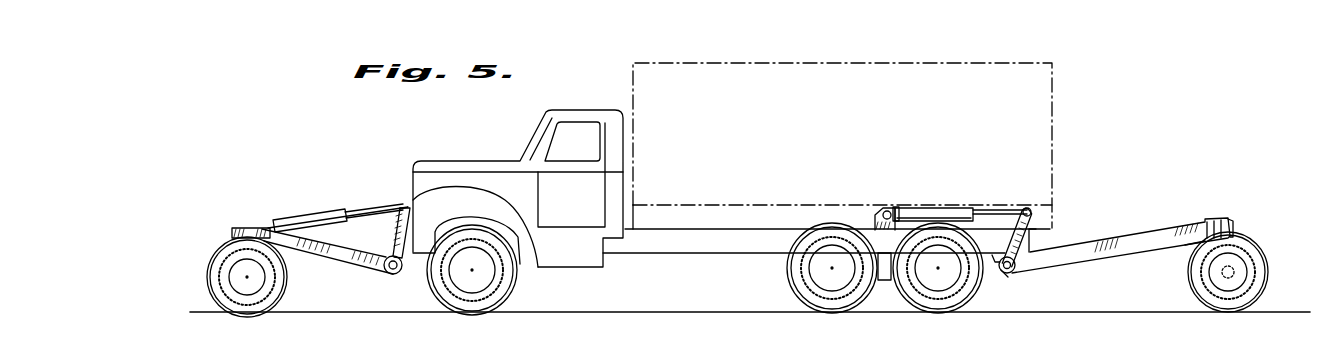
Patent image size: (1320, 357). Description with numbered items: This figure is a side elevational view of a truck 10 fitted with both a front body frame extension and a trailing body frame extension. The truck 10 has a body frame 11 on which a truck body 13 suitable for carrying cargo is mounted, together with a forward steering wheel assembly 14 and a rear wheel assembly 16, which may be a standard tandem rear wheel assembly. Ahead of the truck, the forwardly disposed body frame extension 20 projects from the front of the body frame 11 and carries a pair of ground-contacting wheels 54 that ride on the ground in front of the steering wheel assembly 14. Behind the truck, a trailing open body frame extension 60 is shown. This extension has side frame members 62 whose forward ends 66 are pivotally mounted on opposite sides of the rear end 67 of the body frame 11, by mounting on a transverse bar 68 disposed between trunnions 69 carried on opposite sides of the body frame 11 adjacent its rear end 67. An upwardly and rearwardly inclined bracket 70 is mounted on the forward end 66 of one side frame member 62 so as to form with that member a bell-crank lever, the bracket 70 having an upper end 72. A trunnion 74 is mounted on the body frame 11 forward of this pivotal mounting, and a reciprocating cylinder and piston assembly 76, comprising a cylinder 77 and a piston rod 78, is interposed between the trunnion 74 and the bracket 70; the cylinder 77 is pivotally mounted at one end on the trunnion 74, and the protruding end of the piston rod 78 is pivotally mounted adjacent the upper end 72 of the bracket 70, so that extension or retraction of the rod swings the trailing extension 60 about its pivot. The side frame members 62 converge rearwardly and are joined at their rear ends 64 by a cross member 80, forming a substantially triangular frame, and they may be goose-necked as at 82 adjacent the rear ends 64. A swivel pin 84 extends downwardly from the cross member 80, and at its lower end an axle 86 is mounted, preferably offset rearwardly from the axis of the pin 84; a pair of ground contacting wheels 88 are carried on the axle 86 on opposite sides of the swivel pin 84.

The truck 10 is at (778, 58).
The body frame 11 is at (727, 247).
The truck body 13 is at (842, 145).
The forward steering wheel assembly 14 is at (522, 284).
The rear wheel assembly 16 is at (885, 286).
The body frame extension 20 is at (345, 263).
The ground-contacting wheels 54 is at (220, 265).
The trailing open body frame extension 60 is at (1130, 249).
The side frame members 62 is at (1108, 243).
The rear ends 64 is at (1233, 225).
The forward ends 66 is at (1013, 273).
The rear end 67 is at (1036, 247).
The transverse bar 68 is at (1003, 279).
The trunnions 69 is at (996, 264).
The bracket 70 is at (1036, 220).
The upper end 72 is at (1040, 210).
The trunnion 74 is at (878, 210).
The reciprocating cylinder and piston assembly 76 is at (946, 205).
The cylinder 77 is at (912, 206).
The piston rod 78 is at (1005, 209).
The cross member 80 is at (1218, 222).
The goose-neck 82 is at (1196, 221).
The swivel pin 84 is at (1190, 244).
The axle 86 is at (1252, 265).
The ground contacting wheels 88 is at (1259, 283).